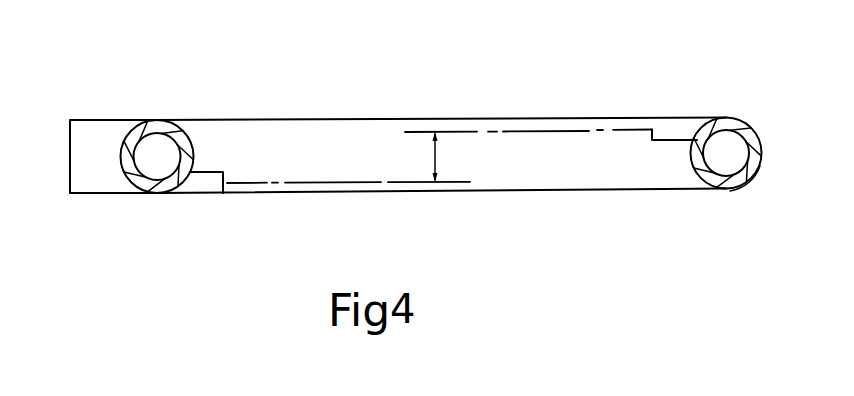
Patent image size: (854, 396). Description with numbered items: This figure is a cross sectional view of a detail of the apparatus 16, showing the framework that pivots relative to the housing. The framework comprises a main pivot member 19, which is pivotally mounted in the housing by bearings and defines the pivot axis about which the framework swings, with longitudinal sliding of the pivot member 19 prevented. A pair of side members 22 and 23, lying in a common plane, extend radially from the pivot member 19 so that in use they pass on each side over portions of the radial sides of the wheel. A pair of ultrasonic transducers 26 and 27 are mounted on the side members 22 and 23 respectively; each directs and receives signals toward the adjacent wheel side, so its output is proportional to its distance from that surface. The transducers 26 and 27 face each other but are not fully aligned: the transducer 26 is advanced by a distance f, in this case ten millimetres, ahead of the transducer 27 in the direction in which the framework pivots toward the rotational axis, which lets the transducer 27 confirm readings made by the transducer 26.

The apparatus 16 is at (208, 100).
The main pivot member 19 is at (90, 132).
The side member 22 is at (132, 178).
The side member 23 is at (695, 180).
The ultrasonic transducer 26 is at (210, 186).
The ultrasonic transducer 27 is at (682, 118).